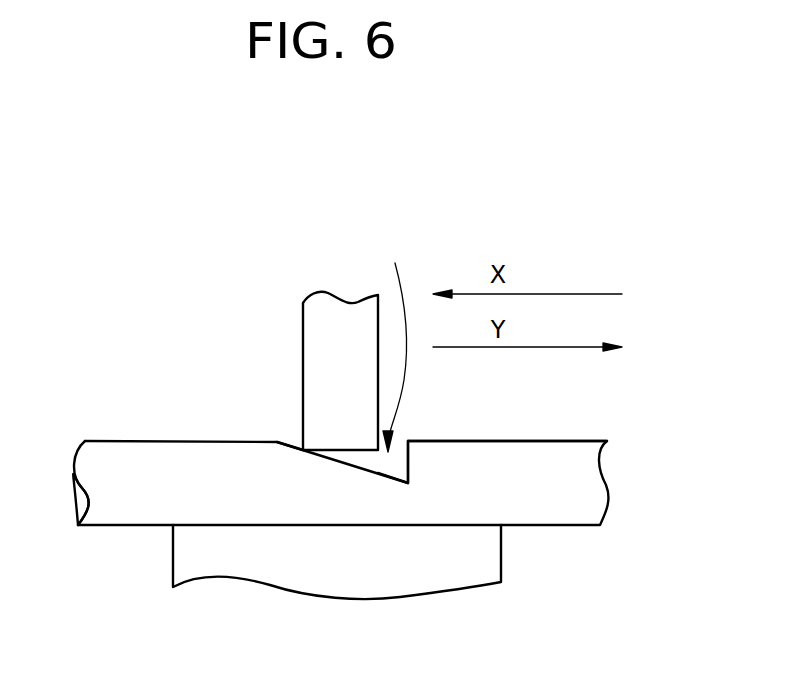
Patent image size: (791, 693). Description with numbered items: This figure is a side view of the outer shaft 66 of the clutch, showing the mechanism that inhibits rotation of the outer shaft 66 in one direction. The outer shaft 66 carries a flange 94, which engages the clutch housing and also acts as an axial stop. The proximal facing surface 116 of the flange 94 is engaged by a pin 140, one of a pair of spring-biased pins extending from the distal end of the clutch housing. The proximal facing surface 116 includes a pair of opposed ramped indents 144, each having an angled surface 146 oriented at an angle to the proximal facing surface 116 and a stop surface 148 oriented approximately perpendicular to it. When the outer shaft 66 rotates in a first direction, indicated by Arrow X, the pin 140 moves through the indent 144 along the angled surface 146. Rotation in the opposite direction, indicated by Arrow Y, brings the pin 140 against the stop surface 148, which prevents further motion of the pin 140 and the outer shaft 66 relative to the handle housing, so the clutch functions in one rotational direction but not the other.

The proximal facing surface 116 is at (128, 440).
The outer shaft 66 is at (475, 549).
The pin 140 is at (310, 325).
The ramped indent 144 is at (391, 343).
The angled surface 146 is at (289, 444).
The stop surface 148 is at (405, 461).
The flange 94 is at (545, 468).